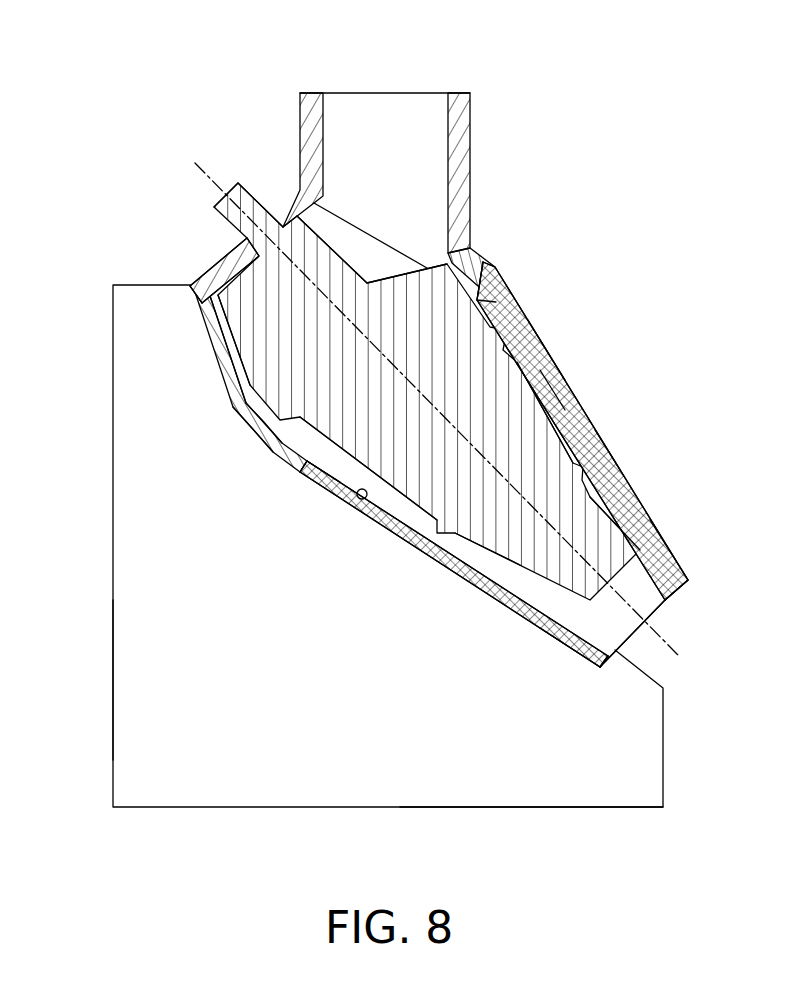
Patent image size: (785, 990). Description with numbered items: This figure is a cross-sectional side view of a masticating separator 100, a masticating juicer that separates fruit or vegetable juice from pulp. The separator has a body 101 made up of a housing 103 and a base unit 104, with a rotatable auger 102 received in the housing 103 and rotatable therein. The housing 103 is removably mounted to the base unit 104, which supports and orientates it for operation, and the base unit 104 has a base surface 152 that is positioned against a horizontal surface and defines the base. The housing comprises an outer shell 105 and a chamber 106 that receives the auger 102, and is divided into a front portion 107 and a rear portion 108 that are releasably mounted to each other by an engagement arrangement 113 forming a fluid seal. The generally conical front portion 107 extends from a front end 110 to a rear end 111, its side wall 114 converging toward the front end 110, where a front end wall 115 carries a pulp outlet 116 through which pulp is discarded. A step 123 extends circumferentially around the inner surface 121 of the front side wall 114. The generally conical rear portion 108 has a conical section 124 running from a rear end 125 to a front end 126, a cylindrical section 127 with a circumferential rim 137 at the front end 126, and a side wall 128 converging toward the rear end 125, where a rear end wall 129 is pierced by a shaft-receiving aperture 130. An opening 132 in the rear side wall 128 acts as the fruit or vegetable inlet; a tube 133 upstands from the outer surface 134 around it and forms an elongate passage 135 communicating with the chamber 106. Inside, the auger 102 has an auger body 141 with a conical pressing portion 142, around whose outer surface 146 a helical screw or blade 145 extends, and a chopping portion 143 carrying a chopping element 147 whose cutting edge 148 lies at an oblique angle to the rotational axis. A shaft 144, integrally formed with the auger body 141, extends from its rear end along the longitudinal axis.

The masticating separator 100 is at (635, 117).
The body 101 is at (113, 583).
The rotatable auger 102 is at (585, 500).
The housing 103 is at (558, 360).
The base unit 104 is at (148, 666).
The outer shell 105 is at (545, 330).
The chamber 106 is at (467, 580).
The front portion 107 is at (602, 432).
The rear portion 108 is at (227, 383).
The front end 110 is at (678, 573).
The rear end 111 is at (497, 283).
The engagement arrangement 113 is at (293, 470).
The side wall 114 is at (513, 610).
The front end wall 115 is at (610, 672).
The pulp outlet 116 is at (663, 603).
The inner surface 121 is at (360, 500).
The step 123 is at (323, 477).
The conical section 124 is at (217, 332).
The rear end 125 is at (210, 307).
The front end 126 is at (260, 417).
The cylindrical section 127 is at (290, 453).
The side wall 128 is at (225, 362).
The rear end wall 129 is at (210, 262).
The shaft-receiving aperture 130 is at (247, 241).
The opening 132 is at (430, 170).
The tube 133 is at (460, 122).
The outer surface 134 is at (478, 252).
The passage 135 is at (385, 112).
The rim 137 is at (535, 305).
The auger body 141 is at (420, 483).
The pressing portion 142 is at (525, 423).
The chopping portion 143 is at (260, 380).
The shaft 144 is at (248, 187).
The helical screw or blade 145 is at (657, 547).
The outer surface 146 is at (568, 648).
The chopping element 147 is at (378, 260).
The cutting edge 148 is at (348, 217).
The base surface 152 is at (520, 807).